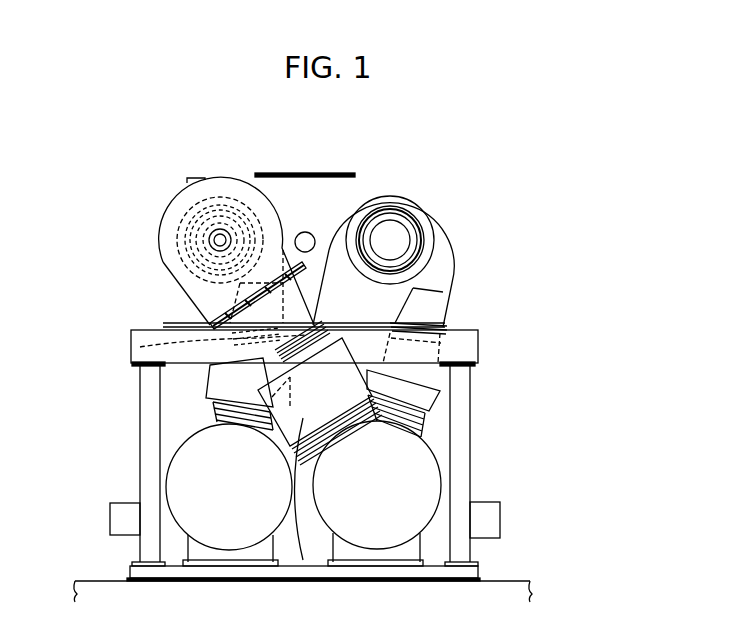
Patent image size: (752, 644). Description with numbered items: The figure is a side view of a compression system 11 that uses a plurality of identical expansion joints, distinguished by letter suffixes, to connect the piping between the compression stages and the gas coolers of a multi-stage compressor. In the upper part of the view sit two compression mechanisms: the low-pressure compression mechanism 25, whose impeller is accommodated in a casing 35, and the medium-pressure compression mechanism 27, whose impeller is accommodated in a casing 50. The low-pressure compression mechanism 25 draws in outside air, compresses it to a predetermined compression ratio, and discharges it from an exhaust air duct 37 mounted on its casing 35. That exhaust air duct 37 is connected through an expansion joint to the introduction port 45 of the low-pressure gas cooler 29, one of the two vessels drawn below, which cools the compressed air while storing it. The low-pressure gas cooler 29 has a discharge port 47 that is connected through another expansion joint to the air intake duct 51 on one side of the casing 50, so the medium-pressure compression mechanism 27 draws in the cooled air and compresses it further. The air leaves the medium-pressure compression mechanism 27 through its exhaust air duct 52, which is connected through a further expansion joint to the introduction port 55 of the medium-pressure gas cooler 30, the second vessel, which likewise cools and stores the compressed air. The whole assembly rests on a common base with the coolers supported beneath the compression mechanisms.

The compression system 11 is at (560, 158).
The medium-pressure compression mechanism 27 is at (150, 208).
The casing 50 is at (160, 238).
The air intake duct 51 is at (300, 300).
The low-pressure compression mechanism 25 is at (470, 228).
The casing 35 is at (410, 195).
The exhaust air duct 37 is at (440, 372).
The exhaust air duct 52 is at (140, 347).
The introduction port 55 is at (212, 410).
The introduction port 45 is at (422, 437).
The medium-pressure gas cooler 30 is at (232, 520).
The discharge port 47 is at (303, 560).
The low-pressure gas cooler 29 is at (378, 520).